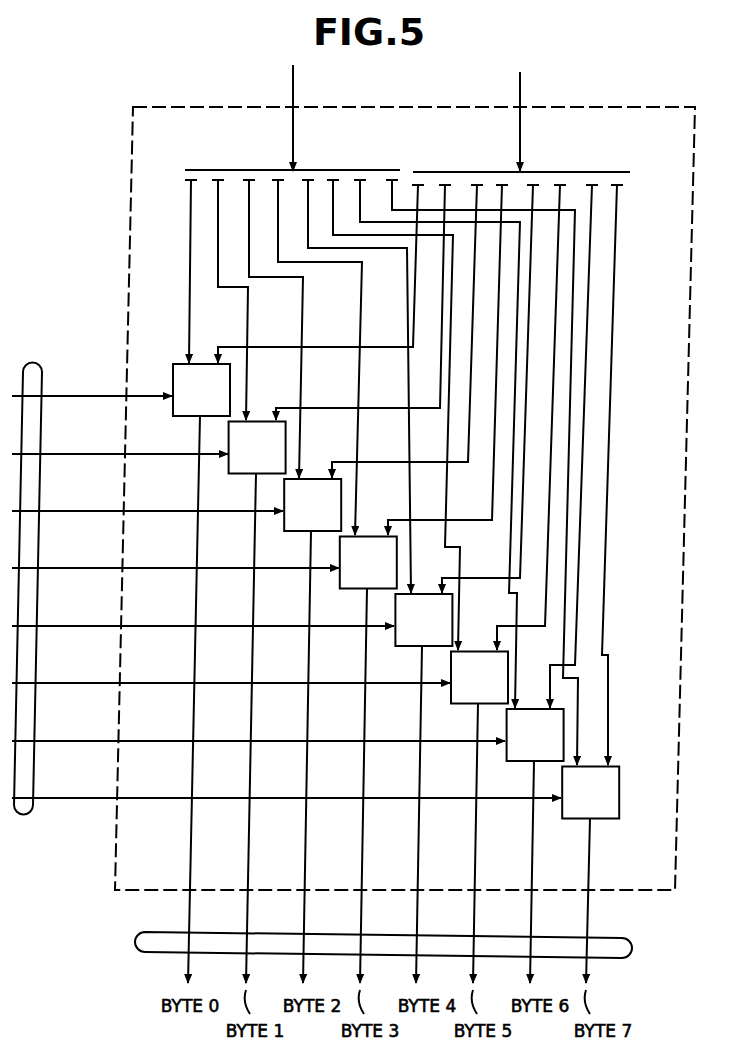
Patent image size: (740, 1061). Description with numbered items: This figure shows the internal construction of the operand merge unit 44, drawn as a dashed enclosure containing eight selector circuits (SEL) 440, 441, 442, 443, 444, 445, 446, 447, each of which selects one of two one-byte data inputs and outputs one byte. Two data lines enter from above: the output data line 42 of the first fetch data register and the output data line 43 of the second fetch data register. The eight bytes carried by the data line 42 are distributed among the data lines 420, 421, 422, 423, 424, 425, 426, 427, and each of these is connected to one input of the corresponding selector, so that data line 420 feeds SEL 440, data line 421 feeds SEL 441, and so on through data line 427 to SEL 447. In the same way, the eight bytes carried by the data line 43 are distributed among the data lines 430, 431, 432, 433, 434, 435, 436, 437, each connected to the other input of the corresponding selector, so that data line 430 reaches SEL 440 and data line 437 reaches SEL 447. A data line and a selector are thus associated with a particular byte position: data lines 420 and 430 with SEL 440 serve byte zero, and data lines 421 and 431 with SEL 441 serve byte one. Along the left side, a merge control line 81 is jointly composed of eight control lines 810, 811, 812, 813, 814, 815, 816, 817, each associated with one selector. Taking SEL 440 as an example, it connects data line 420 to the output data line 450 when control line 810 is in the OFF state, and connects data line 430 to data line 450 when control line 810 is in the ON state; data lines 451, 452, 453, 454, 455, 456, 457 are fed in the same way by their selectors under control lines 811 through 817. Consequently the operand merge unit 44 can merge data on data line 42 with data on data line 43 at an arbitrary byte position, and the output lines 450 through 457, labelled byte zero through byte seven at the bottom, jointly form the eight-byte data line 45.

The output data line of FDR 37 42 is at (294, 86).
The output data line of FDR 38 43 is at (521, 89).
The operand merge unit 44 is at (654, 115).
The 8-byte data line 45 is at (624, 948).
The merge control line 81 is at (33, 362).
The data line 420 is at (190, 196).
The data line 421 is at (216, 250).
The data line 422 is at (247, 270).
The data line 423 is at (252, 277).
The data line 424 is at (303, 268).
The data line 425 is at (332, 225).
The data line 426 is at (360, 200).
The data line 427 is at (395, 200).
The data line 430 is at (330, 348).
The data line 431 is at (378, 409).
The data line 432 is at (390, 463).
The data line 433 is at (398, 521).
The data line 434 is at (482, 578).
The data line 435 is at (494, 627).
The data line 436 is at (578, 648).
The data line 437 is at (609, 683).
The selector circuit 440 is at (192, 419).
The selector circuit 441 is at (249, 477).
The selector circuit 442 is at (310, 545).
The selector circuit 443 is at (345, 590).
The selector circuit 444 is at (397, 647).
The selector circuit 445 is at (452, 704).
The selector circuit 446 is at (507, 762).
The selector circuit 447 is at (563, 819).
The data line 450 is at (189, 830).
The data line 451 is at (247, 828).
The data line 452 is at (305, 828).
The data line 453 is at (361, 828).
The data line 454 is at (418, 828).
The data line 455 is at (475, 828).
The data line 456 is at (531, 828).
The data line 457 is at (588, 845).
The control line 810 is at (88, 395).
The control line 811 is at (86, 453).
The control line 812 is at (86, 510).
The control line 813 is at (84, 567).
The control line 814 is at (84, 625).
The control line 815 is at (84, 682).
The control line 816 is at (84, 740).
The control line 817 is at (84, 797).